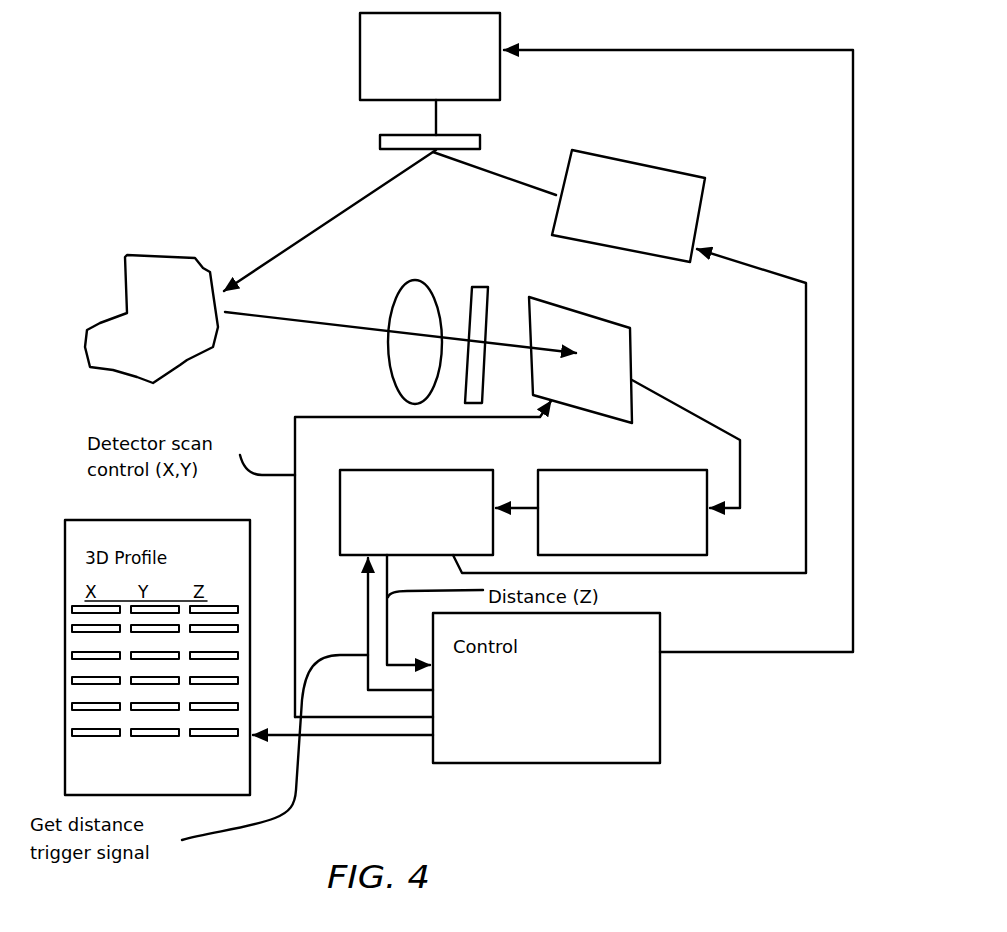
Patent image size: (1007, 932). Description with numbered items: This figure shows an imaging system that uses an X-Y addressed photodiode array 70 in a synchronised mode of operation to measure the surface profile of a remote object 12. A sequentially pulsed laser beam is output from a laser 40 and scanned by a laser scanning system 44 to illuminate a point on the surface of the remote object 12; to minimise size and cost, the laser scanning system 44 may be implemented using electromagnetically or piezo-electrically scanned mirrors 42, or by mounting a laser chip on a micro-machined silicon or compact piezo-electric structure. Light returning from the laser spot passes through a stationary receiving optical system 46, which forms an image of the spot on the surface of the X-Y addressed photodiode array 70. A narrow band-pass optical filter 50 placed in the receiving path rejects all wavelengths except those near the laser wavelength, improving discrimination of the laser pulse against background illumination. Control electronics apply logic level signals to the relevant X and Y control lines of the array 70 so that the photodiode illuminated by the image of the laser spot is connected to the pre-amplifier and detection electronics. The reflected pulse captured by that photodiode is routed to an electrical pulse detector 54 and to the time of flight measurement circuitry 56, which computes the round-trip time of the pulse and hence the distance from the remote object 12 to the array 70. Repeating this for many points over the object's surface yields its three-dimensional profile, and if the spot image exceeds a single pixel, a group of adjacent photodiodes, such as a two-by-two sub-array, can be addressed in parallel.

The remote object 12 is at (195, 257).
The laser 40 is at (637, 253).
The scanned mirrors 42 is at (407, 135).
The laser scanning system 44 is at (360, 50).
The receiving optical system 46 is at (438, 300).
The narrow band-pass optical filter 50 is at (477, 285).
The electrical pulse detector 54 is at (600, 470).
The time of flight measurement circuitry 56 is at (402, 470).
The X-Y addressed photodiode array 70 is at (633, 327).